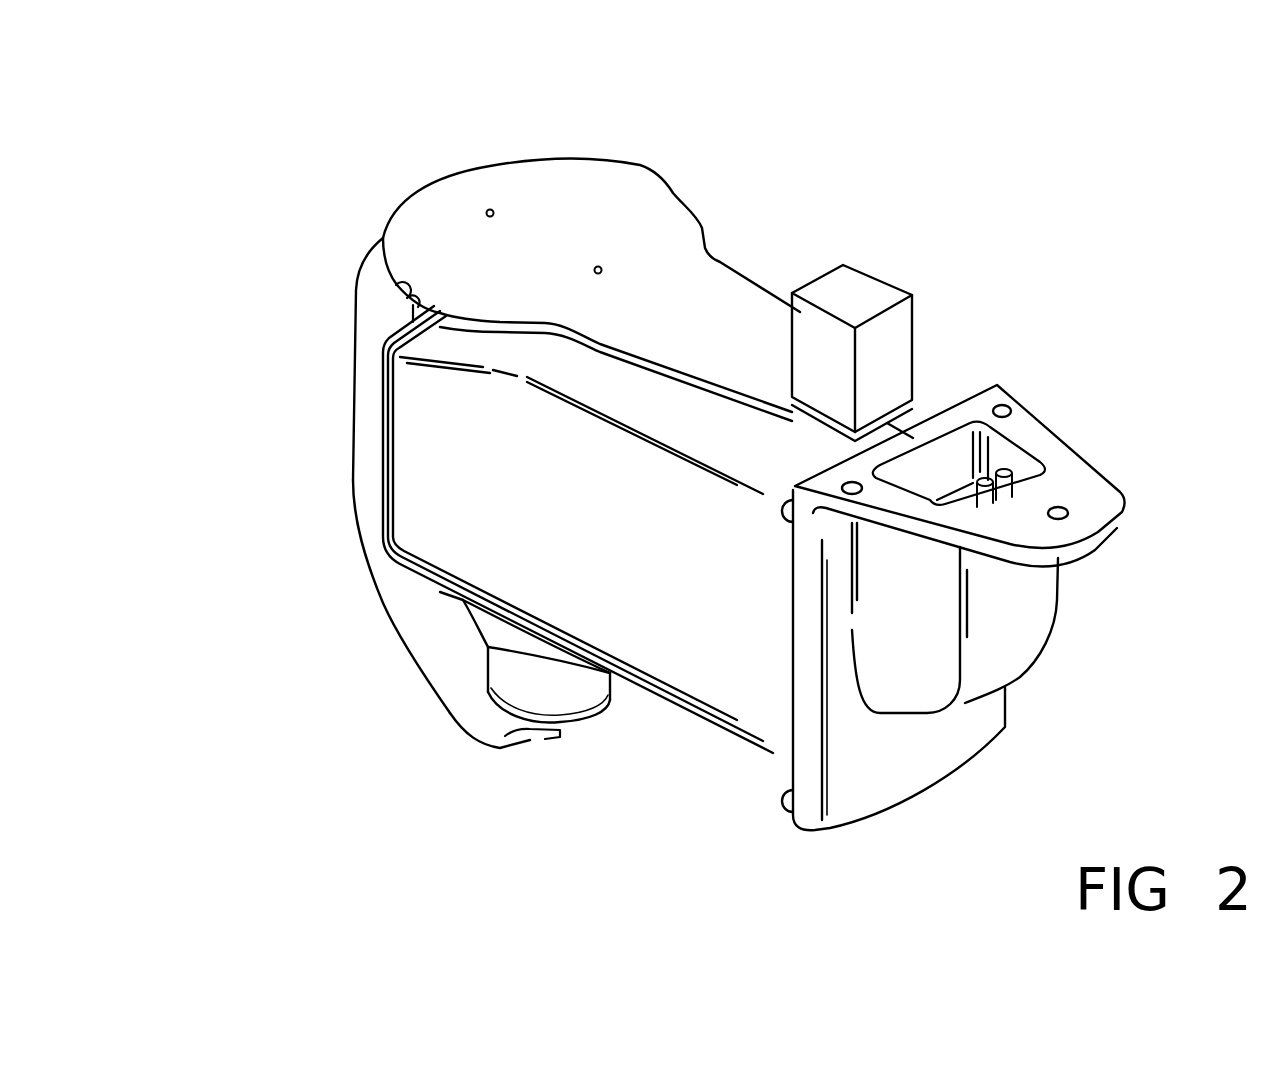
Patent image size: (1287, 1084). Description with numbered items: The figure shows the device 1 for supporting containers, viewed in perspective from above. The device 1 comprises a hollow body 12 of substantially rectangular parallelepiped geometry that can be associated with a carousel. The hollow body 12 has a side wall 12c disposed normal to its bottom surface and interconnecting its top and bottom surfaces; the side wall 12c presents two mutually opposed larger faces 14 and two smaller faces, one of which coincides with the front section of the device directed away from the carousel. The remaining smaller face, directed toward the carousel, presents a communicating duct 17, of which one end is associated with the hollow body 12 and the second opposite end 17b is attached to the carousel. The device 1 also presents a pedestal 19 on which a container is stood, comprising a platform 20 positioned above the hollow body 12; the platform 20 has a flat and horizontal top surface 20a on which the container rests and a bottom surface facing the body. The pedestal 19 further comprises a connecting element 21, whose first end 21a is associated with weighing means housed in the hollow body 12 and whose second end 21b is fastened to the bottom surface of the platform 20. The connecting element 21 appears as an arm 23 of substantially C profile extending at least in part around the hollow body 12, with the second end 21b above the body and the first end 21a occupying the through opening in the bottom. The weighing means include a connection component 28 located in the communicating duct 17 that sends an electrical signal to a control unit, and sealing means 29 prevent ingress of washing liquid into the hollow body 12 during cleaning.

The device 1 is at (1032, 213).
The hollow body 12 is at (750, 762).
The side wall 12c is at (440, 480).
The larger faces 14 is at (497, 560).
The communicating duct 17 is at (1037, 665).
The second end of the communicating duct 17b is at (1030, 468).
The pedestal 19 is at (532, 197).
The platform 20 is at (737, 263).
The top surface of the platform 20a is at (606, 198).
The connecting element 21 is at (377, 603).
The first end of the connecting element 21a is at (483, 750).
The second end of the connecting element 21b is at (375, 273).
The arm 23 is at (357, 402).
The connection component 28 is at (1005, 468).
The sealing means 29 is at (600, 735).